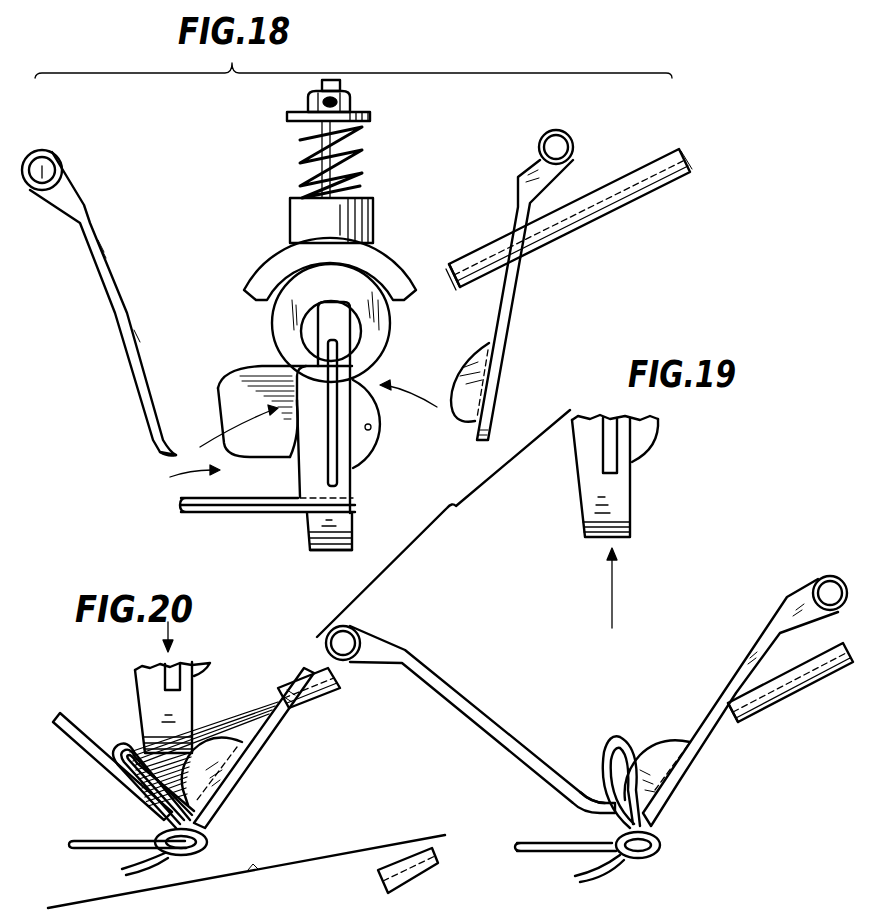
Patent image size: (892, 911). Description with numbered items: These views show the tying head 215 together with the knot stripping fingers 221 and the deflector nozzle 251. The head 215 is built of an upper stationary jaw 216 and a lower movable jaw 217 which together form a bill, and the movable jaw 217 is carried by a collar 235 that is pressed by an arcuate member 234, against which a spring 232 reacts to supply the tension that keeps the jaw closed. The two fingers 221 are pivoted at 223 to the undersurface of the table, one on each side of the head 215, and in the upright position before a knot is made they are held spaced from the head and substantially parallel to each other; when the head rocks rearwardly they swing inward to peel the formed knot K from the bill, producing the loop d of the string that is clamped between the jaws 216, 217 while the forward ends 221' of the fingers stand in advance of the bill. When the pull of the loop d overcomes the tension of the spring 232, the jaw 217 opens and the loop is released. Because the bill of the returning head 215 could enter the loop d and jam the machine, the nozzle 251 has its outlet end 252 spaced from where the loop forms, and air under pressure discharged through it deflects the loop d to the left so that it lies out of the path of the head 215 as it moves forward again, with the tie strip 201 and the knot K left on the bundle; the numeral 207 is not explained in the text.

In FIG. 18, the twisting head assembly 207 is at (280, 433).
In FIG. 18, the tying head 215 is at (258, 460).
In FIG. 18, the upper stationary jaw 216 is at (318, 551).
In FIG. 19, the upper stationary jaw 216 is at (633, 522).
In FIG. 20, the upper stationary jaw 216 is at (140, 705).
In FIG. 18, the lower movable jaw 217 is at (340, 466).
In FIG. 18, the knot stripping fingers 221 is at (303, 303).
In FIG. 19, the knot stripping fingers 221 is at (586, 701).
In FIG. 20, the knot stripping fingers 221 is at (187, 748).
In FIG. 18, the forward ends of the fingers 221' is at (296, 401).
In FIG. 19, the forward ends of the fingers 221' is at (631, 785).
In FIG. 20, the forward ends of the fingers 221' is at (230, 793).
In FIG. 18, the pivots of the fingers 223 is at (42, 185).
In FIG. 18, the spring 232 is at (300, 165).
In FIG. 18, the arcuate member 234 is at (258, 272).
In FIG. 18, the collar 235 is at (272, 330).
In FIG. 18, the nozzle 251 is at (566, 232).
In FIG. 19, the nozzle 251 is at (812, 688).
In FIG. 18, the outlet end of the nozzle 252 is at (447, 270).
In FIG. 19, the outlet end of the nozzle 252 is at (735, 723).
In FIG. 20, the outlet end of the nozzle 252 is at (290, 712).
In FIG. 20, the tie strip 201 is at (117, 841).
In FIG. 19, the loop d is at (615, 737).
In FIG. 20, the loop d is at (118, 752).
In FIG. 19, the knot K is at (651, 859).
In FIG. 20, the knot K is at (208, 855).